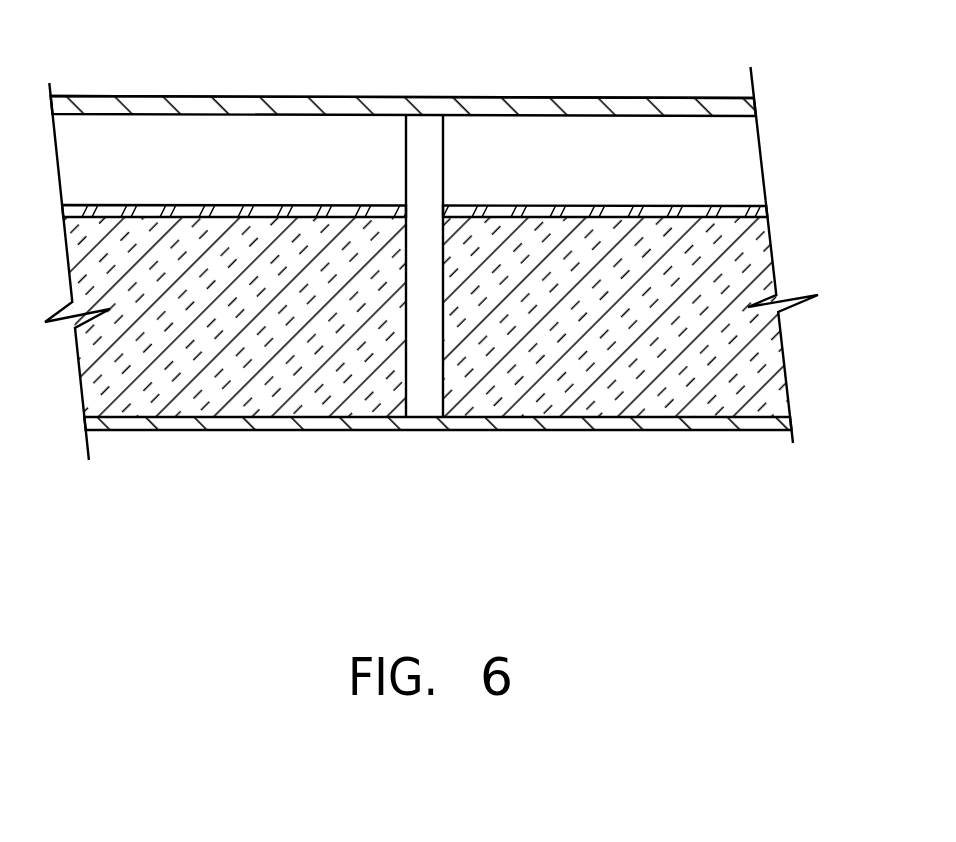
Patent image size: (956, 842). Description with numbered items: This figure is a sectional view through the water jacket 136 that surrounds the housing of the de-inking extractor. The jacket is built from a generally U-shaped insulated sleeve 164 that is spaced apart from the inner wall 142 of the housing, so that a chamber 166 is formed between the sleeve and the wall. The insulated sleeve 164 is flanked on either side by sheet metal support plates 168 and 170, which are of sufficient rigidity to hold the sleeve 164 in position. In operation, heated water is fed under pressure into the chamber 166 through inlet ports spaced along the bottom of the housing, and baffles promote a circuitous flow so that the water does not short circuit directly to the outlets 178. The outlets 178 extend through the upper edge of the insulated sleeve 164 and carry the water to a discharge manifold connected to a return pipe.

The water jacket 136 is at (462, 270).
The inner wall 142 is at (517, 97).
The insulated sleeve 164 is at (777, 360).
The chamber 166 is at (716, 116).
The sheet metal support plate 168 is at (663, 430).
The sheet metal support plate 170 is at (767, 208).
The outlet 178 is at (441, 388).